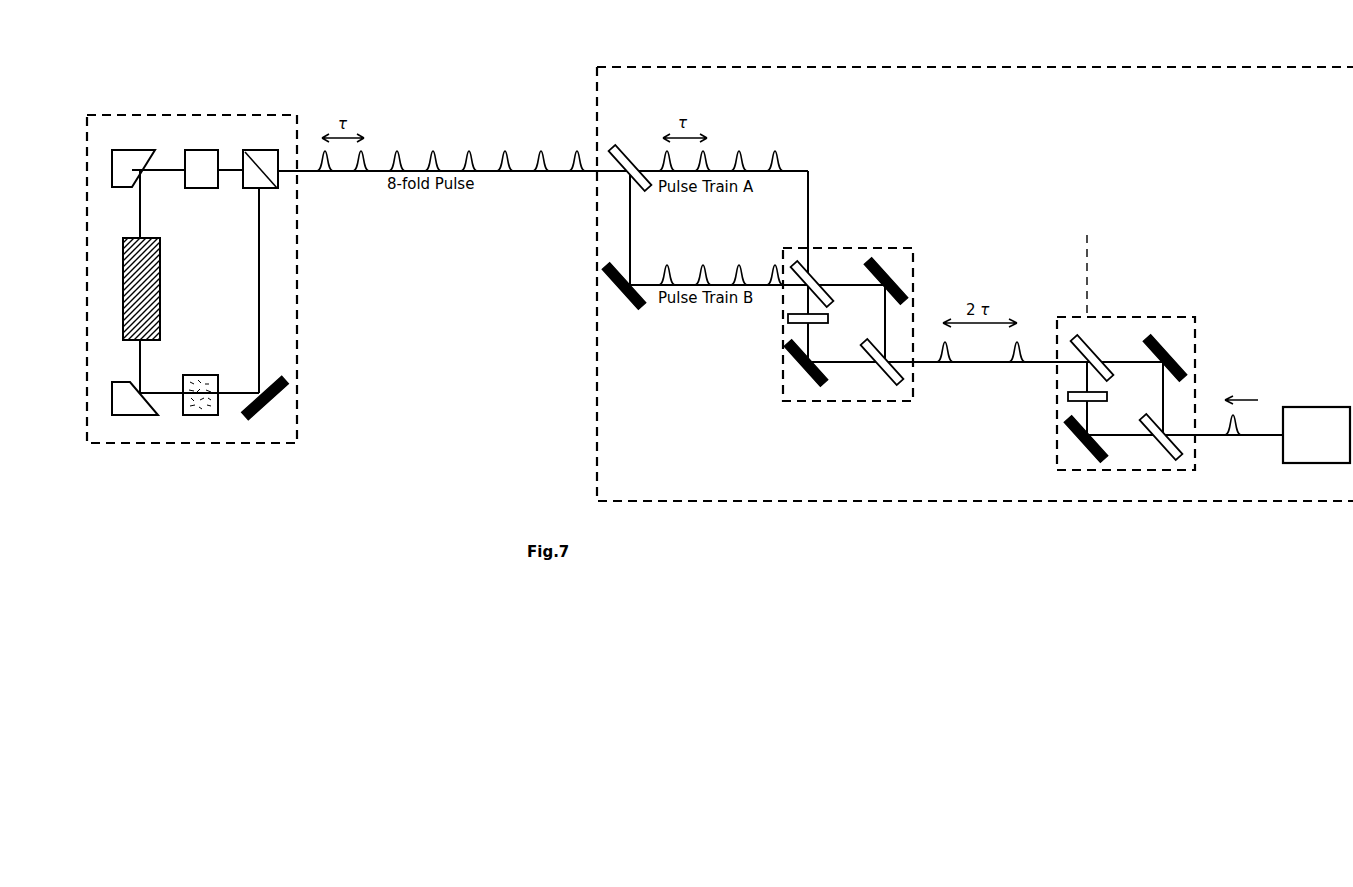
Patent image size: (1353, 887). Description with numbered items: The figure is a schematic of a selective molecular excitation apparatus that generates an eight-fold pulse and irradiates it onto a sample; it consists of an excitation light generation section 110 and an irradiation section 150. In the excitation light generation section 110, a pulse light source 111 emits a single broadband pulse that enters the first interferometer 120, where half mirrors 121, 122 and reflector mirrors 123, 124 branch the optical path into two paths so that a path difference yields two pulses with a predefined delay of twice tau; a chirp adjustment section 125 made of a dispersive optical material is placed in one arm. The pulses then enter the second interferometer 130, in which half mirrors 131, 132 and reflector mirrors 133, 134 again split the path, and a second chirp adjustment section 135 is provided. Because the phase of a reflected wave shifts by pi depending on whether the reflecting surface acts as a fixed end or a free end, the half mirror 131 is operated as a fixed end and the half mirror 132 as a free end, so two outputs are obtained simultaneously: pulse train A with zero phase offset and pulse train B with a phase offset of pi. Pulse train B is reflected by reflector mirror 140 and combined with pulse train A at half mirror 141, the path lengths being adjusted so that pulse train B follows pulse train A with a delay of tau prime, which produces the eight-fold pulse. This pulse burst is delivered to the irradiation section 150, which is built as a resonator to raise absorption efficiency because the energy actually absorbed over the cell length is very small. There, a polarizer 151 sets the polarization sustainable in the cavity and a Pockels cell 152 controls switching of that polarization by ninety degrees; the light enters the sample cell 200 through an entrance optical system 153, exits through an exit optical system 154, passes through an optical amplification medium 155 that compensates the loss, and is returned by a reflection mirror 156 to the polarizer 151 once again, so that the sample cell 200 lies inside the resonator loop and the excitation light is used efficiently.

The excitation light generation section 110 is at (1318, 67).
The pulse light source 111 is at (1310, 407).
The first interferometer 120 is at (1130, 317).
The half mirror 121 is at (1157, 452).
The half mirror 122 is at (1090, 350).
The reflector mirror 123 is at (1066, 444).
The reflector mirror 124 is at (1182, 358).
The chirp adjustment section 125 is at (1068, 396).
The second interferometer 130 is at (866, 248).
The half mirror 131 is at (882, 380).
The half mirror 132 is at (812, 280).
The reflector mirror 133 is at (795, 372).
The reflector mirror 134 is at (900, 278).
The chirp adjustment section 135 is at (788, 318).
The reflector mirror 140 is at (608, 282).
The half mirror 141 is at (630, 158).
The irradiation section 150 is at (233, 115).
The polarizer 151 is at (265, 150).
The Pockels cell 152 is at (196, 150).
The entrance optical system 153 is at (128, 150).
The exit optical system 154 is at (112, 400).
The optical amplification medium 155 is at (200, 415).
The reflection mirror 156 is at (282, 395).
The sample cell 200 is at (123, 280).